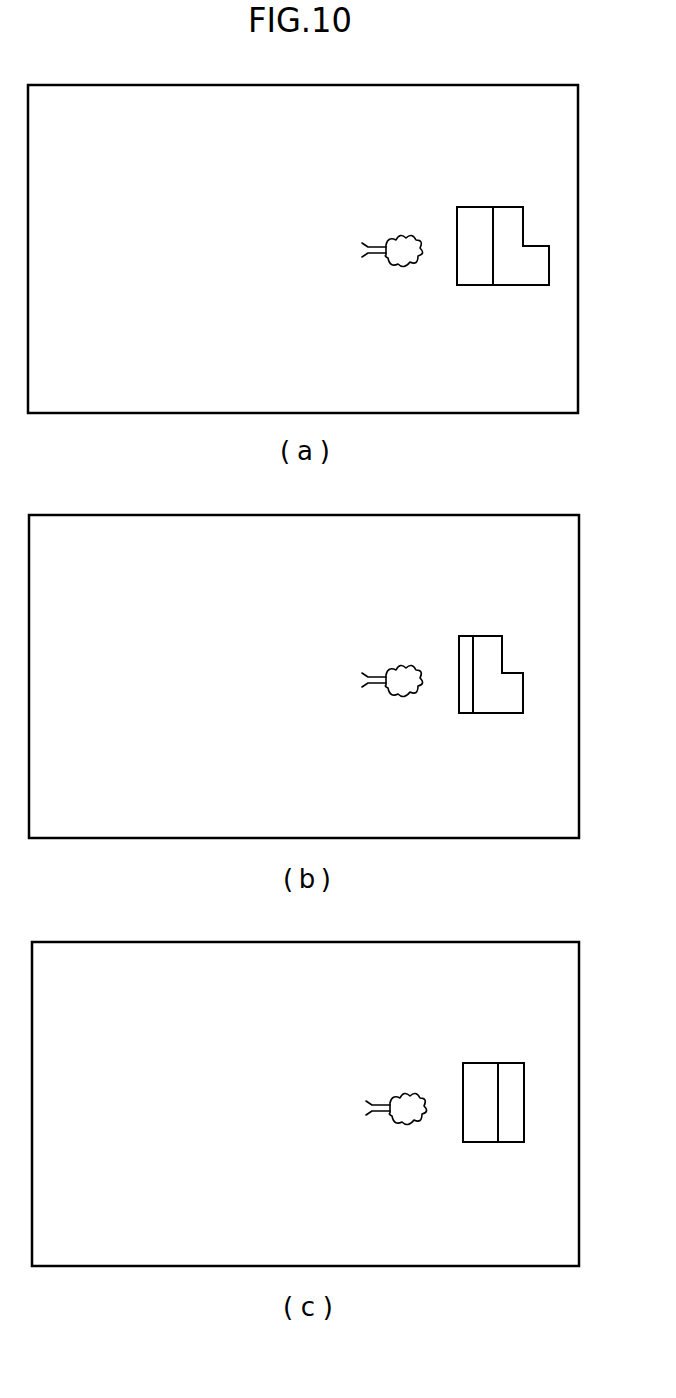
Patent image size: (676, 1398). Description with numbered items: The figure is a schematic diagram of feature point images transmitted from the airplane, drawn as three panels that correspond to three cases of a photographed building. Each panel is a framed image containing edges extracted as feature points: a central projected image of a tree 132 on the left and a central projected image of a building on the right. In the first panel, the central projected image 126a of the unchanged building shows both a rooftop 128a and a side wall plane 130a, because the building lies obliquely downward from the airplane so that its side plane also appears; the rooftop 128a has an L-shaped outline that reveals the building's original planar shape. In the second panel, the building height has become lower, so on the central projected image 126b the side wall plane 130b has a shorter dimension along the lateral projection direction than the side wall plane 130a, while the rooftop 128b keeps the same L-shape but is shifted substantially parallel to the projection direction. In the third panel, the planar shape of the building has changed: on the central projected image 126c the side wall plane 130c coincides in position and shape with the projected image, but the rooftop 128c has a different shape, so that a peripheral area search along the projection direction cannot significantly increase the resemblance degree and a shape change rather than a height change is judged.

The central projected image of tree 132 is at (385, 236).
The central projected image of building 126a is at (488, 258).
The side wall plane 130a is at (468, 217).
The rooftop 128a is at (504, 217).
The central projected image of building 126b is at (478, 686).
The side wall plane 130b is at (467, 645).
The rooftop 128b is at (489, 645).
The central projected image of building 126c is at (493, 1114).
The side wall plane 130c is at (475, 1072).
The rooftop 128c is at (508, 1072).